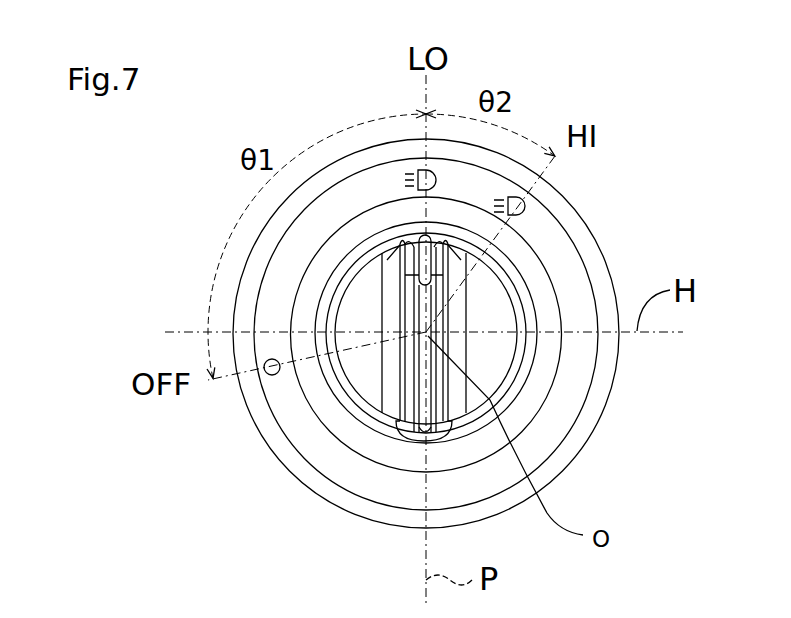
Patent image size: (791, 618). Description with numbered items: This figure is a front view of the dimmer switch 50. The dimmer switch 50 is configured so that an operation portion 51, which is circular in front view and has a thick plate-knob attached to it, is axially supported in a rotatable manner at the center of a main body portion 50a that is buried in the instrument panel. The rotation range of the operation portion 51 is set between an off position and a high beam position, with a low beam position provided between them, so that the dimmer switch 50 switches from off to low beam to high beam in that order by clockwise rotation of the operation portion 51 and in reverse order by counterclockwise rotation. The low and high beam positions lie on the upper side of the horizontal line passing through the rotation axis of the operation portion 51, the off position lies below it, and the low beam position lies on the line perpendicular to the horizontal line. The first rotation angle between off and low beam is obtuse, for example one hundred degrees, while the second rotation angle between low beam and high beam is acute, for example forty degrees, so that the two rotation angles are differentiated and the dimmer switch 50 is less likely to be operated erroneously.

The dimmer switch 50 is at (352, 153).
The main body portion 50a is at (572, 270).
The operation portion 51 is at (405, 302).